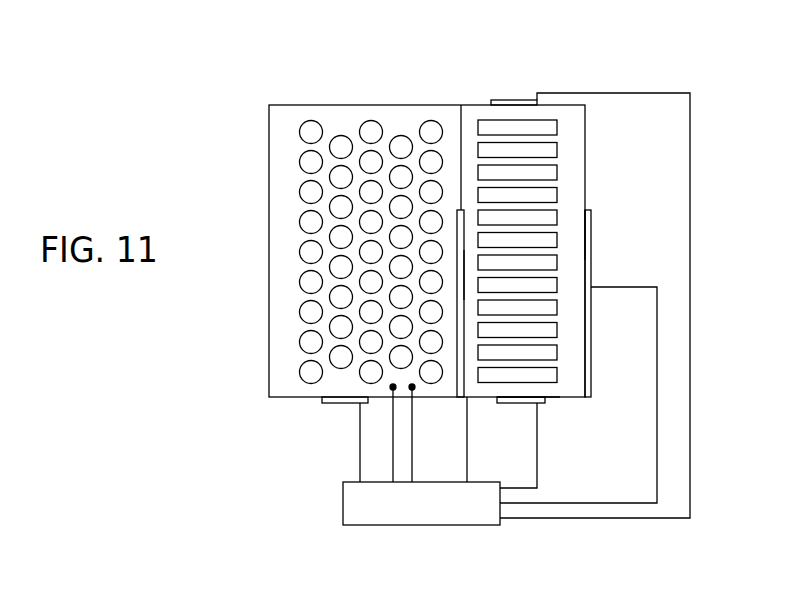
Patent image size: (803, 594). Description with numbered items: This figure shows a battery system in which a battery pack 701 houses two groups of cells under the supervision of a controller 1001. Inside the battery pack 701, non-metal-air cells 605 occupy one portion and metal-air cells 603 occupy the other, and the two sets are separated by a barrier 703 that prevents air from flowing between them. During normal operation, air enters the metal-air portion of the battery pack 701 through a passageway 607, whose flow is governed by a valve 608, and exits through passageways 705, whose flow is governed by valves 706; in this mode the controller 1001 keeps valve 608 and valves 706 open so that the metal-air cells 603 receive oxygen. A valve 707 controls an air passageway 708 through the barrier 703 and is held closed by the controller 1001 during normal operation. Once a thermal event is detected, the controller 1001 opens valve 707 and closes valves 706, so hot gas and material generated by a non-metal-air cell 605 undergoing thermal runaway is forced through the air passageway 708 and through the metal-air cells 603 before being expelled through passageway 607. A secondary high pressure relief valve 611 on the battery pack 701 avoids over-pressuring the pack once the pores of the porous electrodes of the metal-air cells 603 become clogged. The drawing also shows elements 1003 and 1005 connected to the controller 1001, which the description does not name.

The battery pack 701 is at (441, 105).
The barrier 703 is at (463, 116).
The valves 706 is at (503, 100).
The non-metal-air cells 605 is at (401, 147).
The metal-air cells 603 is at (520, 195).
The passageway 607 is at (581, 232).
The valve 608 is at (593, 235).
The valve 707 is at (456, 276).
The air passageway 708 is at (467, 276).
The passageways 705 is at (538, 392).
The secondary high pressure relief valve 611 is at (335, 405).
The sensor 1005 is at (392, 390).
The sensor 1003 is at (411, 390).
The controller 1001 is at (490, 527).